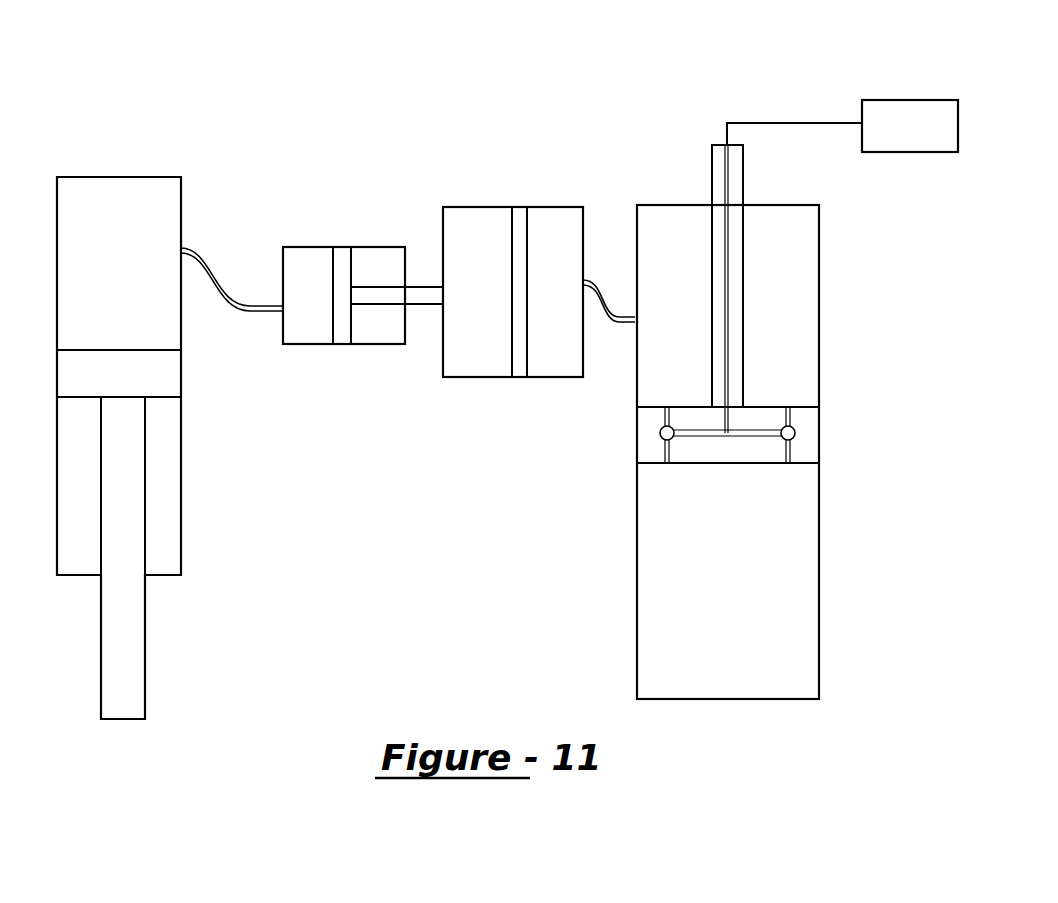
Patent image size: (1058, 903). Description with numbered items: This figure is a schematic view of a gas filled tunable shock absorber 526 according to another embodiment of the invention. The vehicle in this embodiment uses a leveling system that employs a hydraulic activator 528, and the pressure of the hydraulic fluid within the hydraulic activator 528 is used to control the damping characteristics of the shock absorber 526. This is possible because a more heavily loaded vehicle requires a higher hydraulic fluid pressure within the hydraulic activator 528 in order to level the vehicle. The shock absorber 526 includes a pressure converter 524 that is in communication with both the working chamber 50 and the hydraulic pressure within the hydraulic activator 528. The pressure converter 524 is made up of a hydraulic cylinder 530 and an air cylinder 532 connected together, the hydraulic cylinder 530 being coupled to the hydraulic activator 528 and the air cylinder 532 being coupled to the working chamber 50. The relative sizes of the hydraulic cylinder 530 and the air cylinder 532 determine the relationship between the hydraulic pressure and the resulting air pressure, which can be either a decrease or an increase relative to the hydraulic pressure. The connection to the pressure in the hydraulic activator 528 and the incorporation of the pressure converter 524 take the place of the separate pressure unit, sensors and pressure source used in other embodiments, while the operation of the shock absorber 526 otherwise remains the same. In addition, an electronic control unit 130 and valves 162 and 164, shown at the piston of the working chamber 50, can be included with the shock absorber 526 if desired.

The working chamber 50 is at (746, 422).
The electronic control unit 130 is at (933, 141).
The valve 162 is at (660, 434).
The valve 164 is at (795, 433).
The pressure converter 524 is at (513, 304).
The tunable shock absorber 526 is at (588, 86).
The hydraulic activator 528 is at (181, 480).
The hydraulic cylinder 530 is at (341, 333).
The air cylinder 532 is at (520, 213).